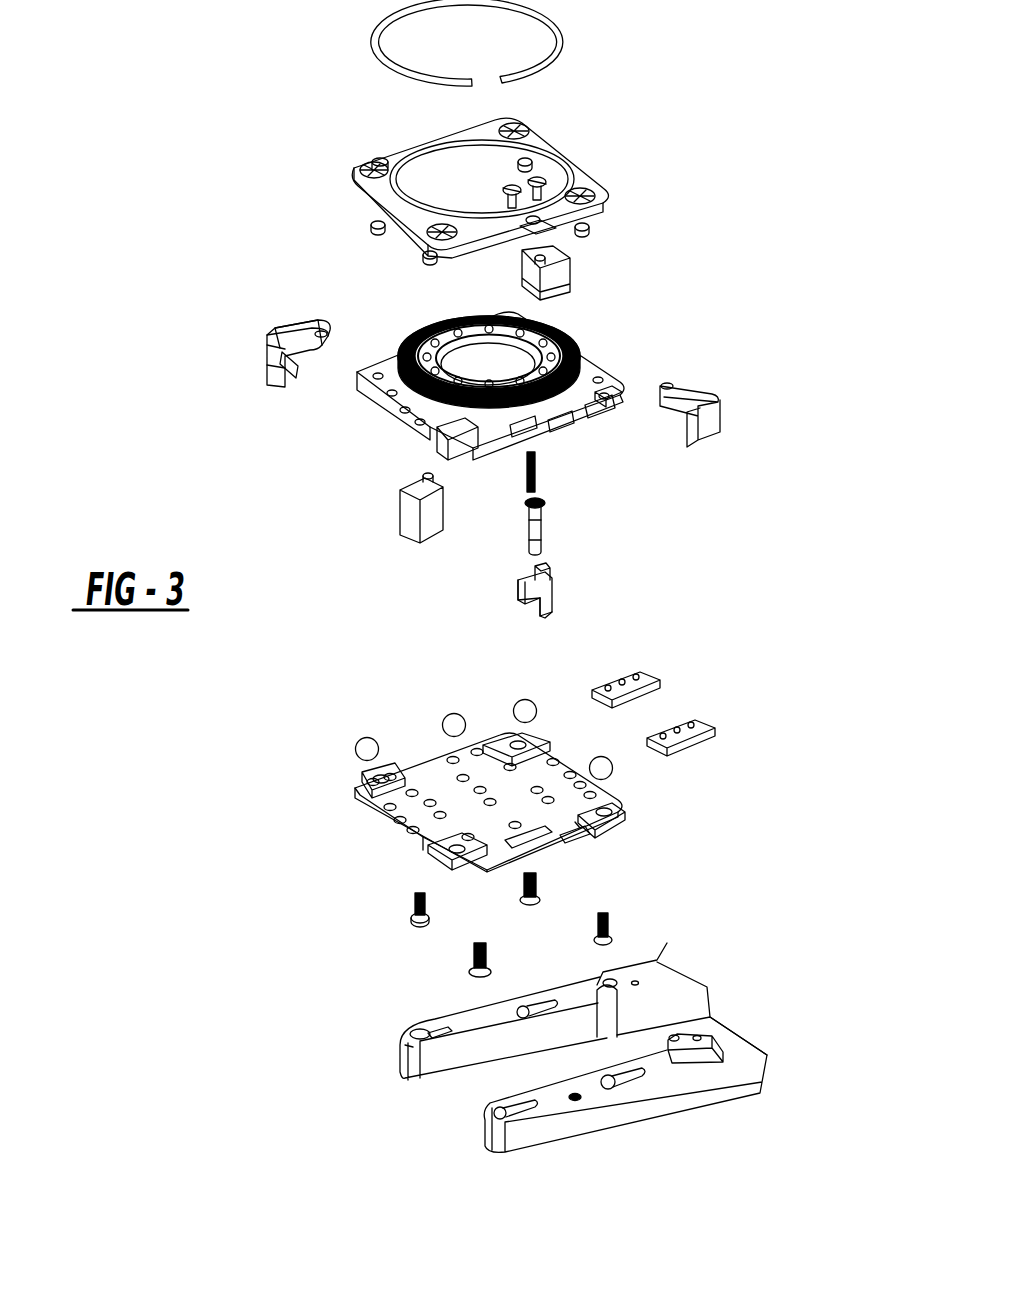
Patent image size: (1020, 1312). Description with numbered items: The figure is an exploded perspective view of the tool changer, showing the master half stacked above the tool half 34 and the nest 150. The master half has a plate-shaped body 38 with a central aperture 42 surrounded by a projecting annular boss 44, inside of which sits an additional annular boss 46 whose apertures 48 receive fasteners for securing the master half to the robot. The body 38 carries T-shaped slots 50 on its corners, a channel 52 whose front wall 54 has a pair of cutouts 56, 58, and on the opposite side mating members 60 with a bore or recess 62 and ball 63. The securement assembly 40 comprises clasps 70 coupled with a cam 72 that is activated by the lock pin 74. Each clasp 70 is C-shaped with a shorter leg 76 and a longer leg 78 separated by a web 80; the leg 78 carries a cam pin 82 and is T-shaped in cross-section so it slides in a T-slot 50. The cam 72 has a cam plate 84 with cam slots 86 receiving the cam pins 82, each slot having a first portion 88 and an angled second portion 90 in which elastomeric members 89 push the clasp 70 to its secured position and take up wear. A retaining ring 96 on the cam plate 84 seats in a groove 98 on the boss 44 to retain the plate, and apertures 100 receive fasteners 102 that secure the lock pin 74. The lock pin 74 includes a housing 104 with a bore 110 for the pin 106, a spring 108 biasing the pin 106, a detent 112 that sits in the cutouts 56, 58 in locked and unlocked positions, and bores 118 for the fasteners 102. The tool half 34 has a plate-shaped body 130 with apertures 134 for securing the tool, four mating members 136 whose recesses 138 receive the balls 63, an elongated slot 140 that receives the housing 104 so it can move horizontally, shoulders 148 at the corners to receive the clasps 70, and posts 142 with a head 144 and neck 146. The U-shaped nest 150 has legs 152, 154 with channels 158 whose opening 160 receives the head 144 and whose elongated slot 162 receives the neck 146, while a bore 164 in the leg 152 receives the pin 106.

The tool half 34 is at (350, 830).
The body 38 is at (467, 508).
The securement assembly 40 is at (290, 300).
The central aperture 42 is at (575, 348).
The projecting annular boss 44 is at (590, 365).
The additional annular boss 46 is at (553, 327).
The apertures 48 is at (560, 335).
The T-shaped slots 50 is at (460, 440).
The channel 52 is at (572, 412).
The front wall 54 is at (540, 425).
The cutout 56 is at (522, 425).
The cutout 58 is at (570, 418).
The mating member 60 is at (627, 423).
The bore or recess 62 is at (418, 462).
The ball 63 is at (368, 737).
The clasp 70 is at (262, 387).
The cam 72 is at (345, 172).
The lock pin 74 is at (557, 592).
The leg 76 is at (288, 388).
The leg 78 is at (288, 325).
The web 80 is at (272, 358).
The cam pin 82 is at (316, 330).
The cam plate 84 is at (580, 175).
The cam slots 86 is at (545, 128).
The first portion 88 is at (365, 178).
The elastomeric members 89 is at (430, 262).
The second portion 90 is at (388, 140).
The retaining ring 96 is at (553, 28).
The groove 98 is at (612, 362).
The apertures 100 is at (560, 228).
The fasteners 102 is at (540, 178).
The housing 104 is at (527, 605).
The pin 106 is at (540, 547).
The spring 108 is at (537, 480).
The bore 110 is at (540, 602).
The detent 112 is at (543, 515).
The bores 118 is at (513, 575).
The body 130 is at (600, 787).
The apertures 134 is at (565, 832).
The mating member 136 is at (352, 782).
The recess 138 is at (362, 778).
The elongated slot 140 is at (540, 842).
The posts 142 is at (415, 908).
The head 144 is at (418, 926).
The neck 146 is at (413, 897).
The shoulders 148 is at (632, 822).
The nest 150 is at (445, 1128).
The leg 152 is at (683, 1097).
The leg 154 is at (573, 995).
The channels 158 is at (418, 1028).
The opening 160 is at (402, 1042).
The elongated slot 162 is at (440, 1030).
The bore 164 is at (578, 1100).